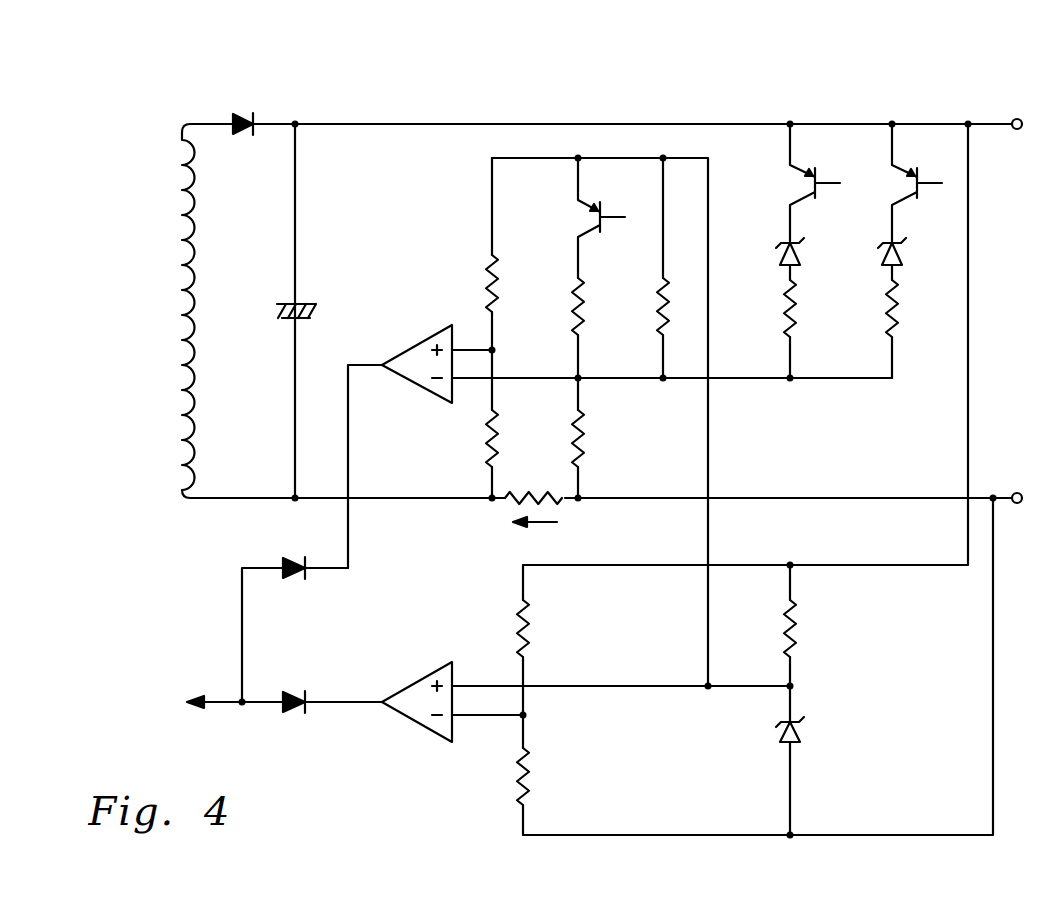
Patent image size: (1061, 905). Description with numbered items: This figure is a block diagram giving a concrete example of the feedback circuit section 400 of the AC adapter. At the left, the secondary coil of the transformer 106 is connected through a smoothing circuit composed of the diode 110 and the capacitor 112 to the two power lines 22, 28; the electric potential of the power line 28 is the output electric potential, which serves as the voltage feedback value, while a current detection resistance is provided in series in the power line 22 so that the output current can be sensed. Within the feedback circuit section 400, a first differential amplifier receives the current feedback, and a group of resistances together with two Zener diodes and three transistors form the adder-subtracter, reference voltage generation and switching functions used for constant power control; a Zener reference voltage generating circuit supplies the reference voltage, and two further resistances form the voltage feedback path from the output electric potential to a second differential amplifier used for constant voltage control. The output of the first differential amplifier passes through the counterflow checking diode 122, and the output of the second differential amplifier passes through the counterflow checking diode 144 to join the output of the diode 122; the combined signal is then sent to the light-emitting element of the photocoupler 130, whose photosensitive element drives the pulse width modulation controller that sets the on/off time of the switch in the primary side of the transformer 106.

The transformer 106 is at (197, 268).
The diode 110 is at (238, 113).
The capacitor 112 is at (300, 304).
The feedback circuit section 400 is at (606, 106).
The power line 28 is at (984, 120).
The power line 22 is at (1000, 494).
The counterflow checking diode 122 is at (299, 580).
The counterflow checking diode 144 is at (299, 714).
The photocoupler 130 is at (145, 704).